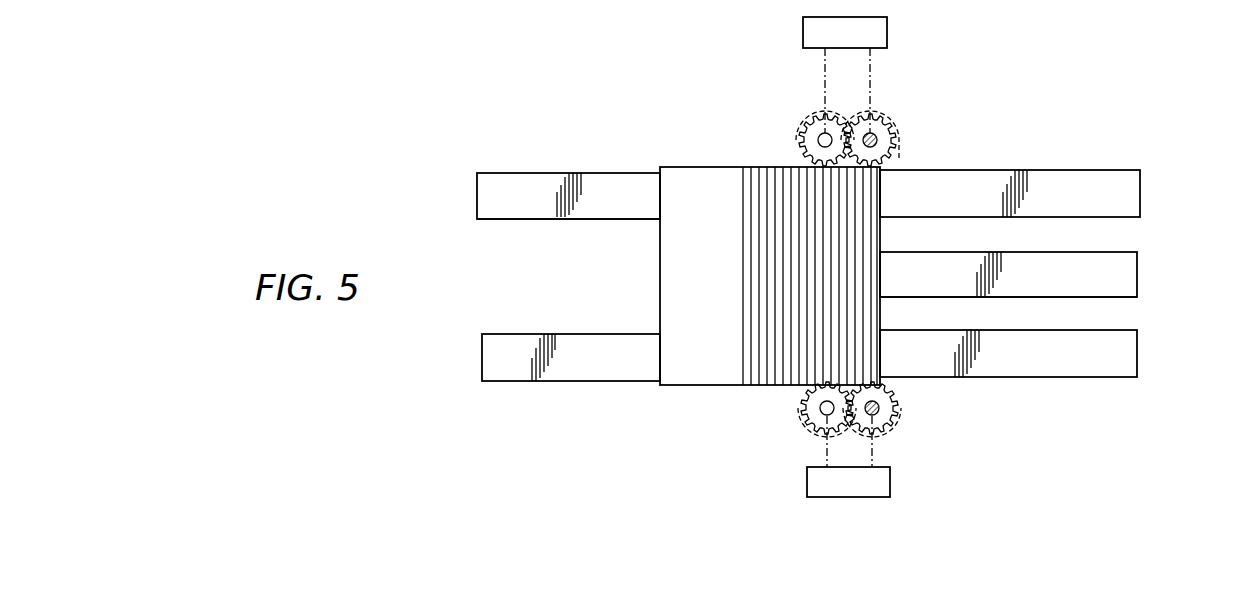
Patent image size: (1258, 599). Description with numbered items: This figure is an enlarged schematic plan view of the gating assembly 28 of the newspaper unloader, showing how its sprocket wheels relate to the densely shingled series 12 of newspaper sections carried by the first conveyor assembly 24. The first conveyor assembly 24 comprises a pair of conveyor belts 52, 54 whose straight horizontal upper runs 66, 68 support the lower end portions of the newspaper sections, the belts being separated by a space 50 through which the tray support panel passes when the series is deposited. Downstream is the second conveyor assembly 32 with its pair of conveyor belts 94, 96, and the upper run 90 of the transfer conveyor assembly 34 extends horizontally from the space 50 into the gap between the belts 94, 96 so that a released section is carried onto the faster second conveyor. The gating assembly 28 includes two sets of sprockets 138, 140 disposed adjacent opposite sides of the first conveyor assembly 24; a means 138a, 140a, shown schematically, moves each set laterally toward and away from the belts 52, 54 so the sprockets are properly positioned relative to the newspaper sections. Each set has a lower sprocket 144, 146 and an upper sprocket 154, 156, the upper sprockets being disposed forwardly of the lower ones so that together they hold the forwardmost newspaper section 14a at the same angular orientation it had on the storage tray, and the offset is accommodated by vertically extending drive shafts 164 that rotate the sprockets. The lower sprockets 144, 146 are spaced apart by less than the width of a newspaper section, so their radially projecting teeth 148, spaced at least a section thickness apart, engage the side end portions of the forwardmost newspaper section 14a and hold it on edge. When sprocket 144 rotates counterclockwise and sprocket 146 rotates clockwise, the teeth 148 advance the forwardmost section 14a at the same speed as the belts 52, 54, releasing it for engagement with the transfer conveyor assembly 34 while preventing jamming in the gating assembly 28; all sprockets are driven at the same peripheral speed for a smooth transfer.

The densely shingled series of newspaper sections 12 is at (750, 160).
The forwardmost newspaper section 14a is at (880, 240).
The first conveyor assembly 24 is at (590, 180).
The gating assembly 28 is at (934, 108).
The second conveyor assembly 32 is at (1103, 178).
The transfer conveyor assembly 34 is at (1145, 247).
The space 50 is at (543, 283).
The conveyor belt 52 is at (486, 182).
The conveyor belt 54 is at (558, 378).
The upper run 66 is at (592, 204).
The upper run 68 is at (593, 365).
The upper run 90 is at (1118, 290).
The conveyor belt 94 is at (1042, 180).
The conveyor belt 96 is at (1100, 365).
The set of sprockets 138 is at (850, 100).
The means for lateral movement 138a is at (888, 30).
The set of sprockets 140 is at (790, 432).
The means for lateral movement 140a is at (890, 483).
The lower sprocket 144 is at (805, 125).
The lower sprocket 146 is at (800, 416).
The radially projecting teeth 148 is at (803, 152).
The upper sprocket 154 is at (895, 140).
The upper sprocket 156 is at (893, 414).
The drive shafts 164 is at (825, 132).